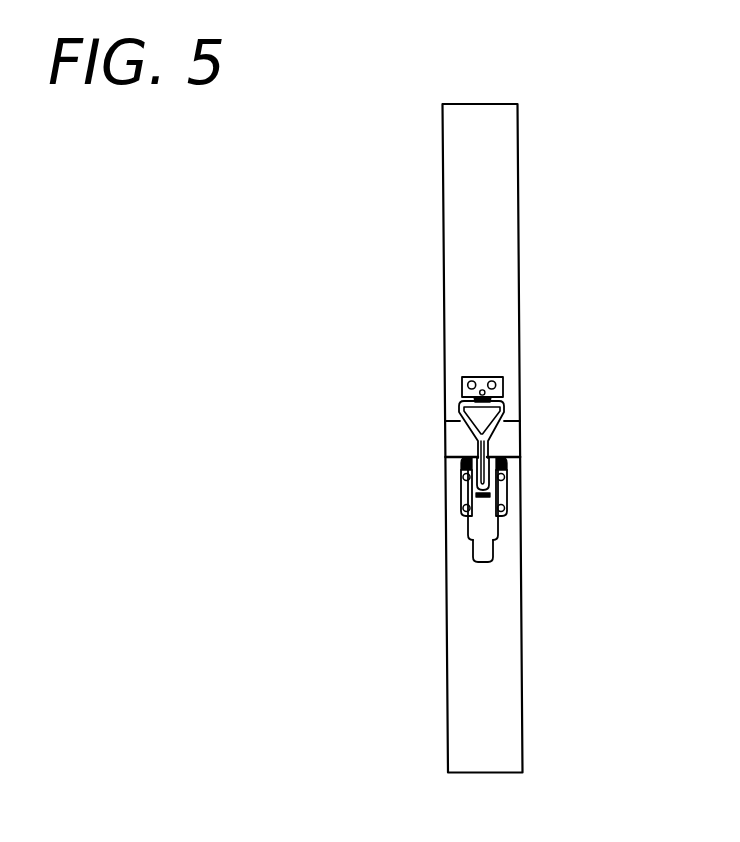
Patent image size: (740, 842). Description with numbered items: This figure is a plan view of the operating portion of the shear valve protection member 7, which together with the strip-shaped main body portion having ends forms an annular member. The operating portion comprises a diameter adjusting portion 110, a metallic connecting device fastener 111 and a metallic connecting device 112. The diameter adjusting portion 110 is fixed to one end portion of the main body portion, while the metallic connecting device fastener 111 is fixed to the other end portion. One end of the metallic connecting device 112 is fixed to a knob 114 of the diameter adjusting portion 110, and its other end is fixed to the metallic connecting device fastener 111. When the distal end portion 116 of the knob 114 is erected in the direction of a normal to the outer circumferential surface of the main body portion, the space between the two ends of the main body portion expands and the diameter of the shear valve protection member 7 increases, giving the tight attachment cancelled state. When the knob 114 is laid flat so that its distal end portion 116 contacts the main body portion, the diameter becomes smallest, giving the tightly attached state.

The shear valve protection member 7 is at (488, 243).
The diameter adjusting portion 110 is at (492, 495).
The metallic connecting device fastener 111 is at (497, 380).
The metallic connecting device 112 is at (488, 442).
The knob 114 is at (485, 527).
The distal end portion 116 is at (483, 551).